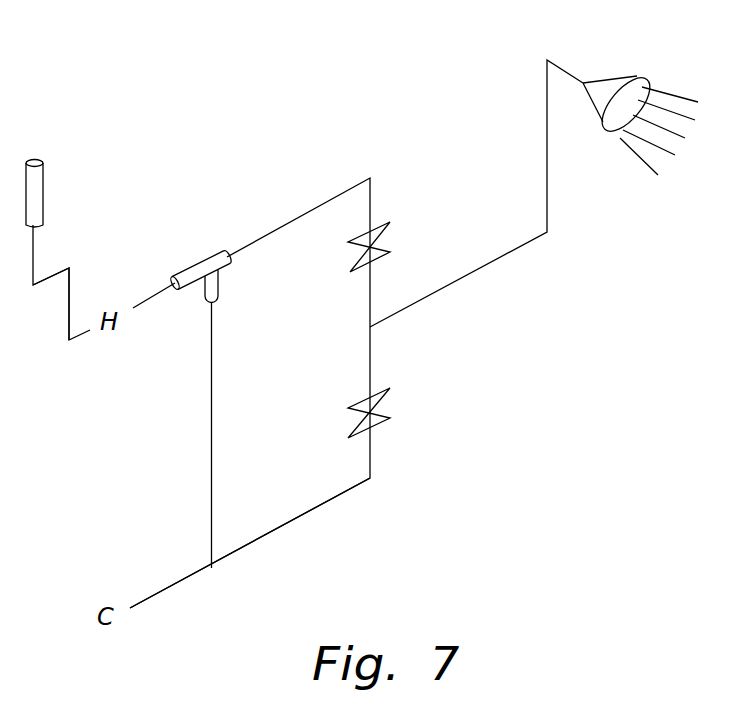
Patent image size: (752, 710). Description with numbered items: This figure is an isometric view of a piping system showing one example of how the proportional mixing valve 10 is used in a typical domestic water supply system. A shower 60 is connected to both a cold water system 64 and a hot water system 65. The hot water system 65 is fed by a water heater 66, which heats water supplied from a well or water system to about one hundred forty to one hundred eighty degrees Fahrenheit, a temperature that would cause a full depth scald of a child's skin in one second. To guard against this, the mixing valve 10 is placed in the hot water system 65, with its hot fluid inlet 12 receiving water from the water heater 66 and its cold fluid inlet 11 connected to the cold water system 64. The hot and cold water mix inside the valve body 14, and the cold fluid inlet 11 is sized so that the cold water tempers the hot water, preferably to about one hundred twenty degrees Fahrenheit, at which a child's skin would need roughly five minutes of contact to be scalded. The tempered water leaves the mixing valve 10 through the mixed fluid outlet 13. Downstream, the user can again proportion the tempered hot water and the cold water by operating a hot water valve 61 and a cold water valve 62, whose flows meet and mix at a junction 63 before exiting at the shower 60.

The mixing valve 10 is at (200, 230).
The cold fluid inlet 11 is at (218, 288).
The hot fluid inlet 12 is at (180, 270).
The mixed fluid outlet 13 is at (222, 250).
The valve body 14 is at (193, 267).
The shower 60 is at (596, 73).
The hot water valve 61 is at (382, 218).
The cold water valve 62 is at (380, 404).
The junction 63 is at (370, 327).
The cold water system 64 is at (163, 588).
The hot water system 65 is at (77, 340).
The water heater 66 is at (40, 160).